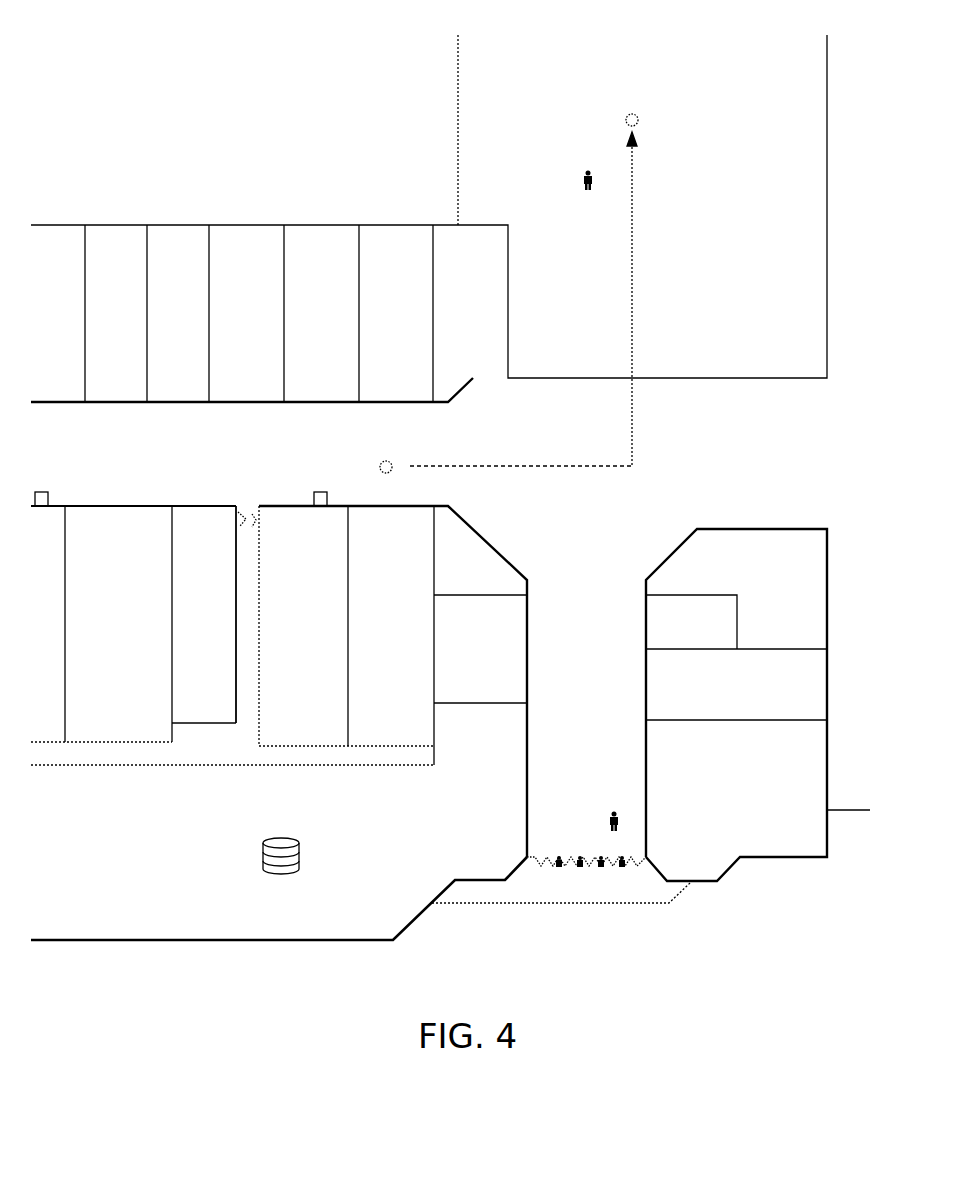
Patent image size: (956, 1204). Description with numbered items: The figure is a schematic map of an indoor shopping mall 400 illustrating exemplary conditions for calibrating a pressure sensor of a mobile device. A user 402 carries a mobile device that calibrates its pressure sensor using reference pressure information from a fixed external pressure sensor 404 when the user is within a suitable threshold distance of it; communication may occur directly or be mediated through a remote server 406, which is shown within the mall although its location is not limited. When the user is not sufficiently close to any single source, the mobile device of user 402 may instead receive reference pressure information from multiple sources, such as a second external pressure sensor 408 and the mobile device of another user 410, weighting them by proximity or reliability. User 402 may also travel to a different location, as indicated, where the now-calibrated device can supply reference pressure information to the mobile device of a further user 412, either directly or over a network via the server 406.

The indoor shopping mall 400 is at (246, 98).
The user 402 is at (638, 110).
The external pressure sensor 404 is at (326, 492).
The remote server 406 is at (299, 855).
The external pressure sensor 408 is at (48, 492).
The user 410 is at (609, 815).
The user 412 is at (583, 175).